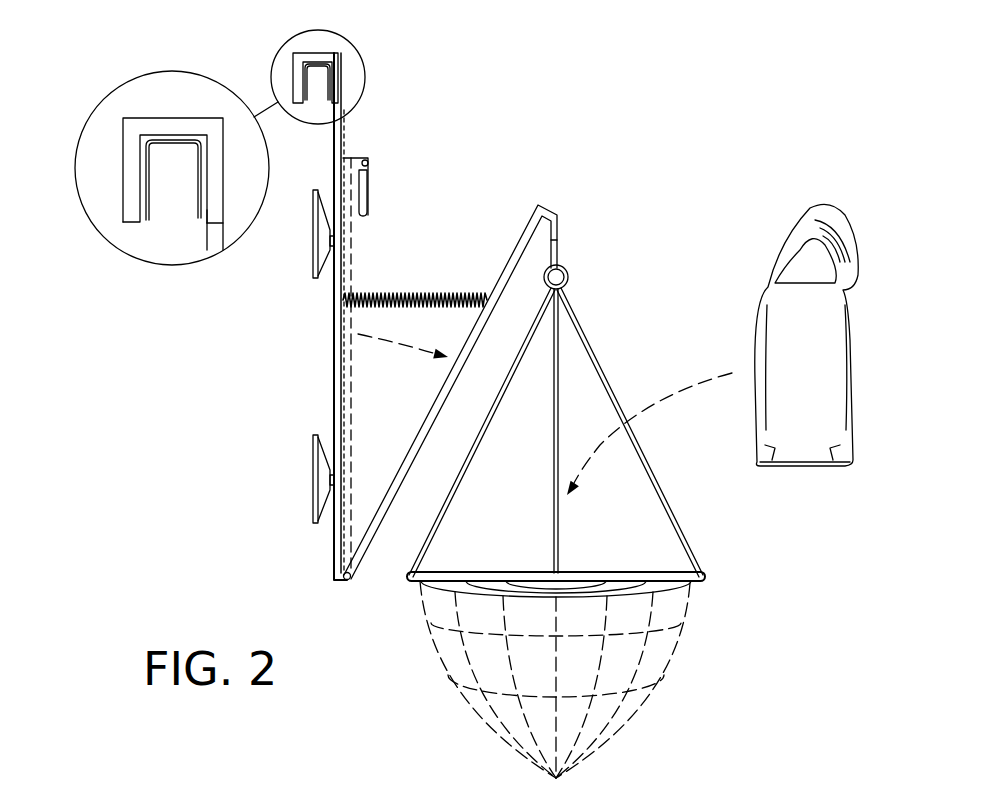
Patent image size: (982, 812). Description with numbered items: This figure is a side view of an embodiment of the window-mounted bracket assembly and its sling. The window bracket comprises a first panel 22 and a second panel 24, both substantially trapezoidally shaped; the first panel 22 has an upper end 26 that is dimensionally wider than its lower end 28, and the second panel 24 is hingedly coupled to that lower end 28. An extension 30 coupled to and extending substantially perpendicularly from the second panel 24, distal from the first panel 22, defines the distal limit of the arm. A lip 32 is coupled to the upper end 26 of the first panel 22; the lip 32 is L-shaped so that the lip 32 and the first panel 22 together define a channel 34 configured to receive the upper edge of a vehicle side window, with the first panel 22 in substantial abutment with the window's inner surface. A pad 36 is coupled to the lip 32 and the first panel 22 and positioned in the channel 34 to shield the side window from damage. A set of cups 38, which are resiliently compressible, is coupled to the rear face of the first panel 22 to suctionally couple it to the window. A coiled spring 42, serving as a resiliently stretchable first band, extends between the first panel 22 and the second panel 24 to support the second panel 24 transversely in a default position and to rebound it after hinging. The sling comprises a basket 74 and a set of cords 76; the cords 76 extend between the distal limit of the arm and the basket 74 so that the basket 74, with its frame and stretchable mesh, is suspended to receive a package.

The first panel 22 is at (217, 193).
The second panel 24 is at (507, 263).
The upper end 26 is at (342, 47).
The lower end 28 is at (347, 581).
The extension 30 is at (548, 205).
The lip 32 is at (160, 118).
The channel 34 is at (193, 220).
The pad 36 is at (177, 140).
The cups 38 is at (313, 237).
The coiled spring 42 is at (408, 291).
The basket 74 is at (615, 575).
The cords 76 is at (507, 378).